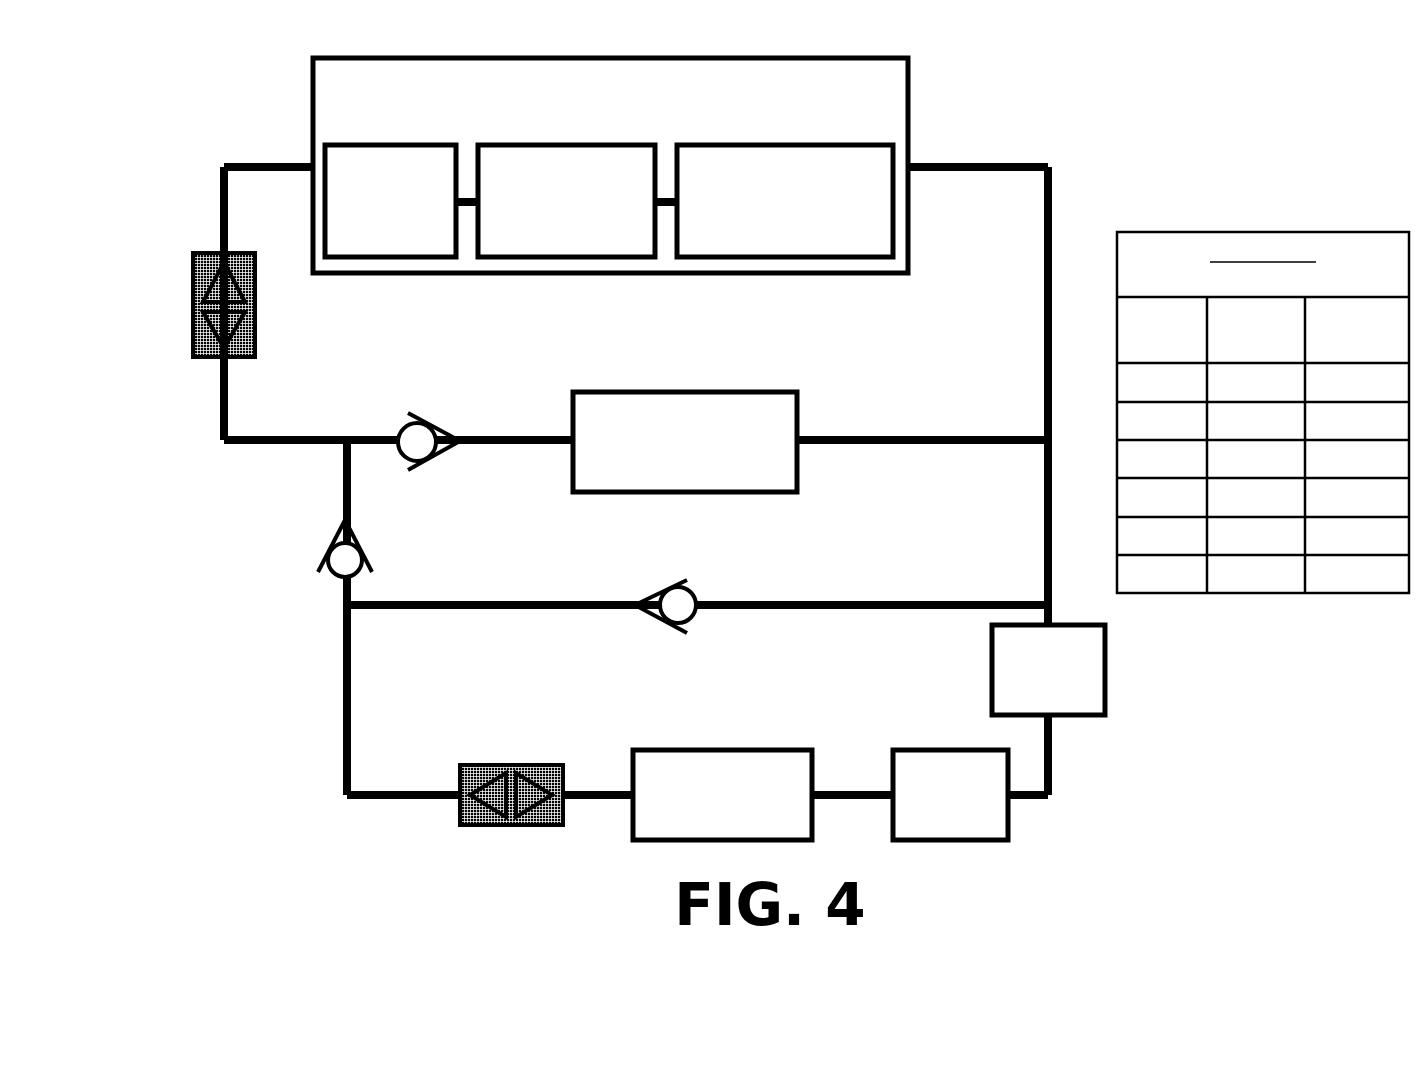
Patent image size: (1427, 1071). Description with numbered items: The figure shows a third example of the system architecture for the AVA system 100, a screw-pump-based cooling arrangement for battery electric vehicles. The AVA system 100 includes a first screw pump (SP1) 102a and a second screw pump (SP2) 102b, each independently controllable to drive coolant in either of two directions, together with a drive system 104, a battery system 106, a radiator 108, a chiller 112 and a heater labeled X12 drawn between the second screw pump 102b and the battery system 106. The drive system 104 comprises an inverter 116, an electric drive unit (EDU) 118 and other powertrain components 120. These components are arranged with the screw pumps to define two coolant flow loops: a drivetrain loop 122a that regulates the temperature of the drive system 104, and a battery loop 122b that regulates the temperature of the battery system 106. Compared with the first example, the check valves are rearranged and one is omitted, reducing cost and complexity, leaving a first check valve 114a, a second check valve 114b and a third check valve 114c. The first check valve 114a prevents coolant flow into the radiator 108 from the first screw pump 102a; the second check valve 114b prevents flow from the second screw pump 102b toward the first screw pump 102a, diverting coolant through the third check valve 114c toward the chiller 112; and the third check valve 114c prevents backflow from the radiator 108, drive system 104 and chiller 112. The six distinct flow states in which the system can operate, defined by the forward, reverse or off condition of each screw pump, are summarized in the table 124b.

The AVA system 100 is at (1119, 67).
The first screw pump (SP1) 102a is at (189, 305).
The second screw pump (SP2) 102b is at (511, 758).
The drive system 104 is at (610, 165).
The battery system 106 is at (722, 795).
The radiator 108 is at (685, 442).
The chiller 112 is at (1048, 670).
The PTC heater X12 is at (950, 795).
The first check valve 114a is at (427, 406).
The second check valve 114b is at (390, 548).
The third check valve 114c is at (665, 641).
The inverter 116 is at (390, 201).
The electric drive unit (EDU) 118 is at (566, 201).
The other powertrain components 120 is at (785, 201).
The drivetrain loop 122a is at (977, 133).
The battery loop 122b is at (251, 519).
The table 124b is at (1263, 412).